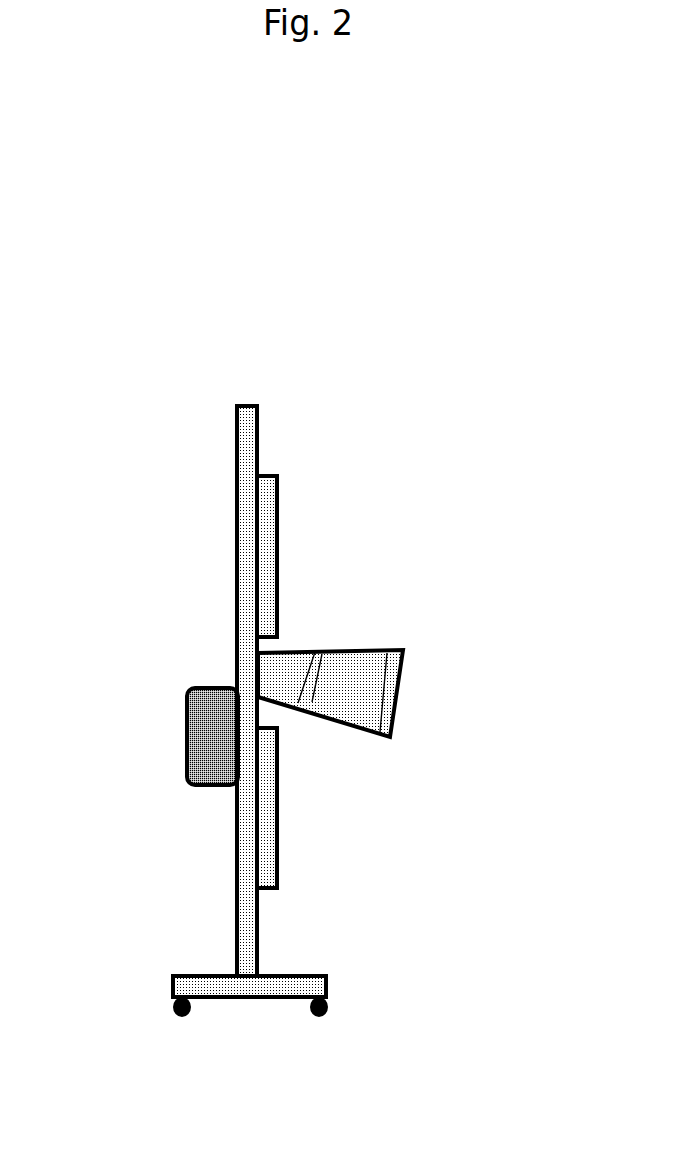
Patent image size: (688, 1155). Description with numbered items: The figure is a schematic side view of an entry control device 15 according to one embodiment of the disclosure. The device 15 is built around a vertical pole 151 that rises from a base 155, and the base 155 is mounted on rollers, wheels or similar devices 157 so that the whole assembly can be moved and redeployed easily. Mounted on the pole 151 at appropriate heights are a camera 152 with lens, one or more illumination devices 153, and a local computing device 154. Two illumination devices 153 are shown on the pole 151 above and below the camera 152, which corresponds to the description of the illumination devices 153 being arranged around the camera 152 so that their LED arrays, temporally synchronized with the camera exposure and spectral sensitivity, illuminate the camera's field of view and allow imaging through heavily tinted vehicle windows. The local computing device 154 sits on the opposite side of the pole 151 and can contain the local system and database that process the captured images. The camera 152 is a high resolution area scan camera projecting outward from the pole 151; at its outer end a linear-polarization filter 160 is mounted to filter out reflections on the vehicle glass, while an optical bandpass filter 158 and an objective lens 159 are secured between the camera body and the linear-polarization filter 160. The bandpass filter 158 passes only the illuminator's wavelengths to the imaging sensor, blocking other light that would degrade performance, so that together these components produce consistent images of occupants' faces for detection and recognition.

The device 15 is at (247, 329).
The pole 151 is at (235, 433).
The camera 152 is at (283, 687).
The illumination device 153 is at (278, 500).
The local computing device 154 is at (187, 722).
The base 155 is at (197, 975).
The wheels 157 is at (306, 1025).
The optical bandpass filter 158 is at (319, 643).
The objective lens 159 is at (357, 715).
The linear-polarization filter 160 is at (402, 643).